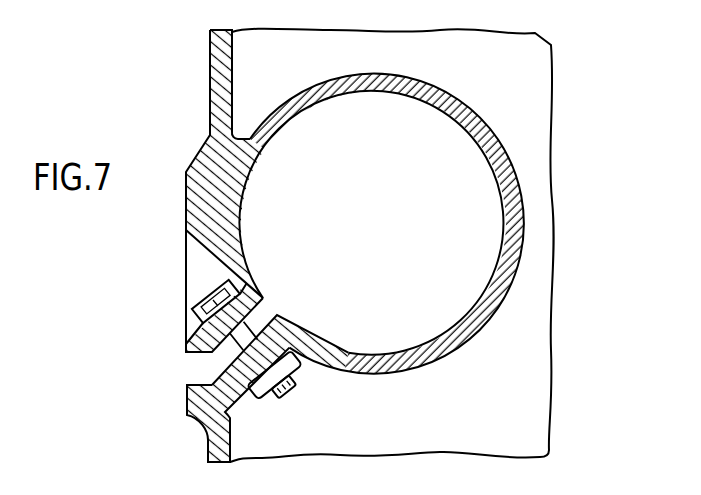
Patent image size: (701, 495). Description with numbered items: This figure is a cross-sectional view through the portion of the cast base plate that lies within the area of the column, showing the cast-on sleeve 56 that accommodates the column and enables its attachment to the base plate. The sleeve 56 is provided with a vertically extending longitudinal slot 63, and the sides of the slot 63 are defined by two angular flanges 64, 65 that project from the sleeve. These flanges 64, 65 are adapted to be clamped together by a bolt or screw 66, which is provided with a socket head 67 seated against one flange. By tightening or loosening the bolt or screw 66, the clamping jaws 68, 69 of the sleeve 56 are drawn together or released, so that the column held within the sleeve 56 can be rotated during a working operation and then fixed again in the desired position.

The sleeve 56 is at (521, 213).
The longitudinal slot 63 is at (263, 322).
The angular flange 64 is at (192, 342).
The angular flange 65 is at (218, 399).
The bolt or screw 66 is at (217, 356).
The socket head 67 is at (203, 295).
The clamping jaw 68 is at (256, 147).
The clamping jaw 69 is at (369, 360).